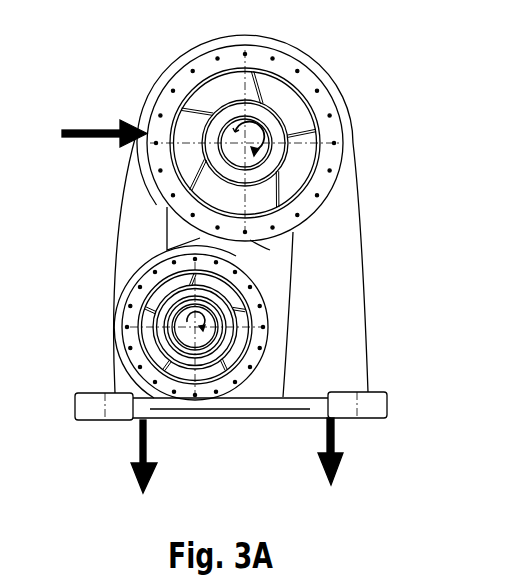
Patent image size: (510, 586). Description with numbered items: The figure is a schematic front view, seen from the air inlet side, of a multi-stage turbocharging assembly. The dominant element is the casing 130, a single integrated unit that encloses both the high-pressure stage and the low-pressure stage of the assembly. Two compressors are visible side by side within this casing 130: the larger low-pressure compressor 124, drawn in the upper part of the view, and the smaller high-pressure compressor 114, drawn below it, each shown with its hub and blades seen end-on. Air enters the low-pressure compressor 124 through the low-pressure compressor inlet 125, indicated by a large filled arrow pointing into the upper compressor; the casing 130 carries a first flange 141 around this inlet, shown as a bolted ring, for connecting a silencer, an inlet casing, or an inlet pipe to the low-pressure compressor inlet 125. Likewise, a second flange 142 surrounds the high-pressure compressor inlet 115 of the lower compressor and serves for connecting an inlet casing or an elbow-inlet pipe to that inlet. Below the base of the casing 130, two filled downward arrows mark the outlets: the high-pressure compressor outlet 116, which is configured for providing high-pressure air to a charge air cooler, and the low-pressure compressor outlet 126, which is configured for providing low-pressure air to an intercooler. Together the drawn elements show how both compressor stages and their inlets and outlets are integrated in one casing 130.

The high-pressure compressor 114 is at (253, 333).
The high-pressure compressor inlet 115 is at (150, 342).
The high-pressure compressor outlet 116 is at (140, 435).
The low-pressure compressor 124 is at (317, 112).
The low-pressure compressor inlet 125 is at (292, 98).
The low-pressure compressor outlet 126 is at (335, 438).
The casing 130 is at (358, 202).
The first flange 141 is at (335, 133).
The second flange 142 is at (128, 318).